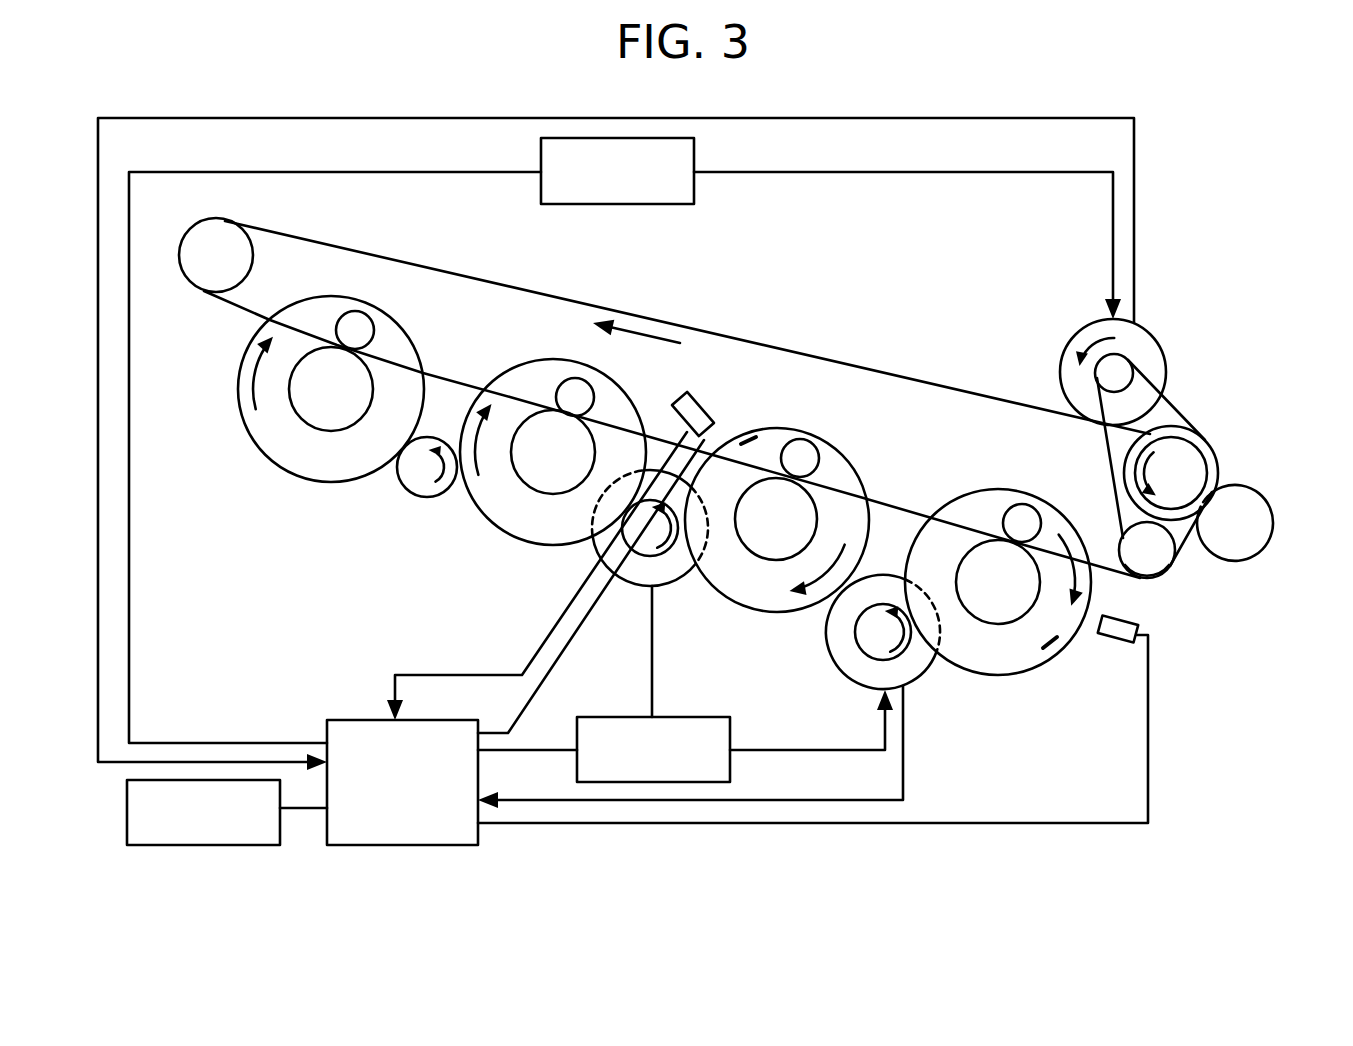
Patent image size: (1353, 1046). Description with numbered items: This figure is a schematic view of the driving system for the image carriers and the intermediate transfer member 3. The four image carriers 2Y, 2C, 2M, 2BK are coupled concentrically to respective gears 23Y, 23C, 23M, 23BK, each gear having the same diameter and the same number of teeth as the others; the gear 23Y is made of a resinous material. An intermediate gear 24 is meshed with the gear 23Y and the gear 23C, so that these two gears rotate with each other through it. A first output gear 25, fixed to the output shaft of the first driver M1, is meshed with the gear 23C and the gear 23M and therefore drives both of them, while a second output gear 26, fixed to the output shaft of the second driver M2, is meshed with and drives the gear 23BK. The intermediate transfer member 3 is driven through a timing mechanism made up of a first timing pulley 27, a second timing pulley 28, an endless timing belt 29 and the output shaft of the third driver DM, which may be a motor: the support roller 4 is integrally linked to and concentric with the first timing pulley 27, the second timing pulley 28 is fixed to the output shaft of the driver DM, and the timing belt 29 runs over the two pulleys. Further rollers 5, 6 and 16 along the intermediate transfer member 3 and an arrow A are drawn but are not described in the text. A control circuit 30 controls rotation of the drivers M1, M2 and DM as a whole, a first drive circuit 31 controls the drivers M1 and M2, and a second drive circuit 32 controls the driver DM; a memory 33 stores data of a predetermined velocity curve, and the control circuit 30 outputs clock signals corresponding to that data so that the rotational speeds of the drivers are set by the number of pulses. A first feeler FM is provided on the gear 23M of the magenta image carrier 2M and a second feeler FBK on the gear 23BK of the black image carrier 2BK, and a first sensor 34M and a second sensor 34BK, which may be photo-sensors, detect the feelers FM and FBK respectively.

The image carrier 2Y is at (327, 455).
The image carrier 2C is at (546, 520).
The image carrier 2M is at (765, 580).
The image carrier 2BK is at (952, 546).
The gear 23Y is at (252, 445).
The gear 23C is at (487, 527).
The gear 23M is at (832, 448).
The gear 23BK is at (1040, 500).
The intermediate transfer member 3 is at (946, 386).
The support roller 4 is at (1178, 507).
The tension roller 5 is at (253, 262).
The support roller 6 is at (1148, 578).
The secondary transfer roller 16 is at (1273, 530).
The intermediate gear 24 is at (413, 497).
The first output gear 25 is at (637, 556).
The second output gear 26 is at (892, 657).
The first timing pulley 27 is at (1205, 453).
The second timing pulley 28 is at (1124, 362).
The timing belt 29 is at (1173, 407).
The control circuit 30 is at (447, 846).
The first drive circuit 31 is at (652, 785).
The second drive circuit 32 is at (658, 205).
The memory 33 is at (250, 846).
The first sensor 34M is at (708, 399).
The second sensor 34BK is at (1113, 644).
The first feeler FM is at (756, 432).
The second feeler FBK is at (1048, 652).
The third driver DM is at (1086, 338).
The first driver M1 is at (673, 583).
The second driver M2 is at (828, 672).
The belt moving direction A is at (636, 346).